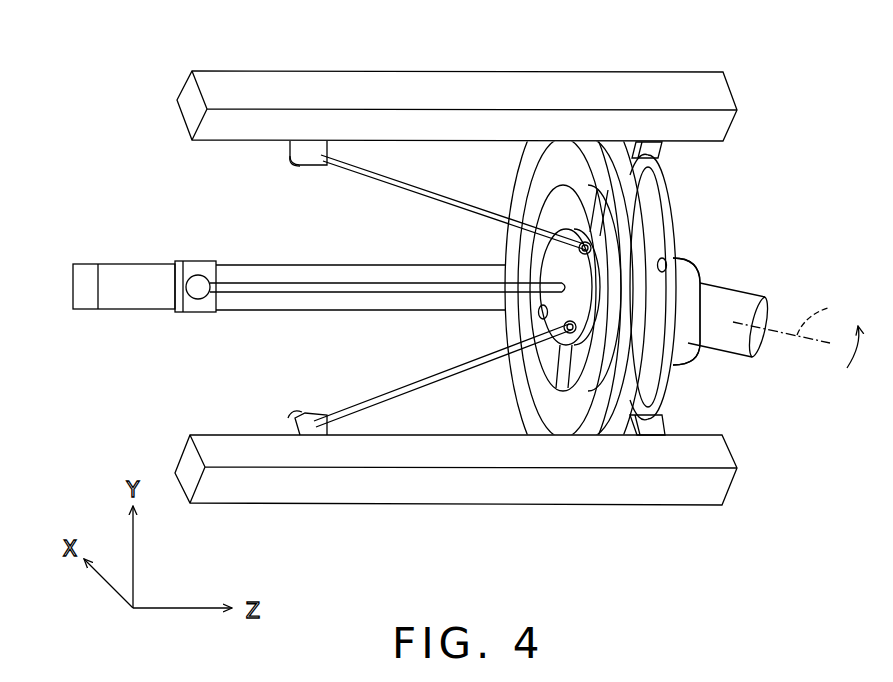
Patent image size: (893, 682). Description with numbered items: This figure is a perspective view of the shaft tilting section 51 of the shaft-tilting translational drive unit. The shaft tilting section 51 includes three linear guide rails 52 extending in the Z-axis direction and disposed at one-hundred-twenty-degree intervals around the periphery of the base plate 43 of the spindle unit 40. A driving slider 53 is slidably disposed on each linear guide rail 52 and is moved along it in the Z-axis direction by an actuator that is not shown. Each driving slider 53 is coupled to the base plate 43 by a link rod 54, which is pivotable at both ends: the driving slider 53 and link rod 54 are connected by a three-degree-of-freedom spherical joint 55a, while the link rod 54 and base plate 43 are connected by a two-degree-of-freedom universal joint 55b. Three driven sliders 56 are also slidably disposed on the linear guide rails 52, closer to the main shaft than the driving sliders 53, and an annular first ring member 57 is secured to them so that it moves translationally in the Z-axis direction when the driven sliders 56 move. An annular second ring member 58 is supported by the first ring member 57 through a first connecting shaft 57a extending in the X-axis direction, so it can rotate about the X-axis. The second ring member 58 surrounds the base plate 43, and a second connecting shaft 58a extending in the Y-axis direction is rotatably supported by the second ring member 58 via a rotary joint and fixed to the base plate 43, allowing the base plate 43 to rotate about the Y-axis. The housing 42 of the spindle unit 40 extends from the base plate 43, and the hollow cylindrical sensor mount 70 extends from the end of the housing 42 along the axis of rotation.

The shaft tilting section 51 is at (464, 293).
The linear guide rail 52 is at (230, 143).
The driving slider 53 is at (318, 153).
The link rod 54 is at (408, 287).
The spherical joint 55a is at (300, 164).
The universal joint 55b is at (604, 318).
The driven slider 56 is at (652, 152).
The first ring member 57 is at (652, 181).
The first connecting shaft 57a is at (538, 316).
The second ring member 58 is at (590, 413).
The second connecting shaft 58a is at (582, 244).
The base plate 43 is at (572, 270).
The spindle unit 40 is at (688, 318).
The housing 42 is at (686, 311).
The sensor mount 70 is at (738, 302).